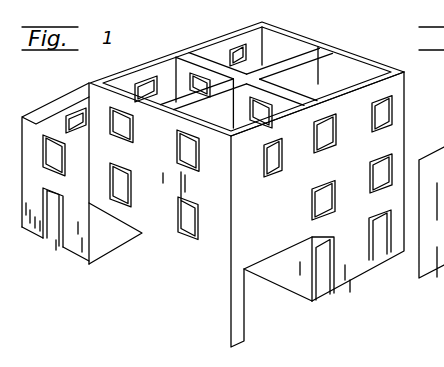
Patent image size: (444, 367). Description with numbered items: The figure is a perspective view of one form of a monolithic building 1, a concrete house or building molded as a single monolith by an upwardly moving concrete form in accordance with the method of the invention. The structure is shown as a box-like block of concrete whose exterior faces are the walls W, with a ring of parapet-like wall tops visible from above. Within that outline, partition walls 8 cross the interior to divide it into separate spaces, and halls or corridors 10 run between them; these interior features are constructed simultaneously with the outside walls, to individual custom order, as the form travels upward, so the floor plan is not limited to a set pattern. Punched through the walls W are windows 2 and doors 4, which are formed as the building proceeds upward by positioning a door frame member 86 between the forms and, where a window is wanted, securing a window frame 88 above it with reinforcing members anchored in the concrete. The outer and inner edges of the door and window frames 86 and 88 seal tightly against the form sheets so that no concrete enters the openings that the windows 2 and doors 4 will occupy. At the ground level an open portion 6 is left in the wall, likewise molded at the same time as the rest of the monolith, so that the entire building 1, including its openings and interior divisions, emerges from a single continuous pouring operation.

The monolithic building 1 is at (51, 97).
The windows 2 is at (178, 212).
The doors 4 is at (53, 235).
The open portion 6 is at (150, 275).
The partition walls 8 is at (250, 65).
The halls or corridors 10 is at (186, 57).
The door frame member 86 is at (46, 238).
The window frame 88 is at (177, 157).
The wall W is at (279, 222).